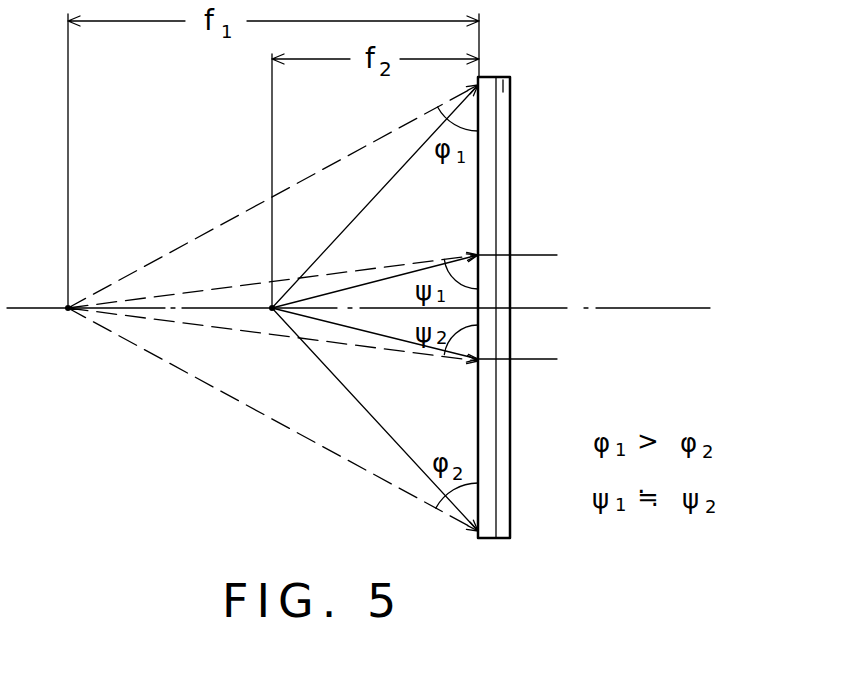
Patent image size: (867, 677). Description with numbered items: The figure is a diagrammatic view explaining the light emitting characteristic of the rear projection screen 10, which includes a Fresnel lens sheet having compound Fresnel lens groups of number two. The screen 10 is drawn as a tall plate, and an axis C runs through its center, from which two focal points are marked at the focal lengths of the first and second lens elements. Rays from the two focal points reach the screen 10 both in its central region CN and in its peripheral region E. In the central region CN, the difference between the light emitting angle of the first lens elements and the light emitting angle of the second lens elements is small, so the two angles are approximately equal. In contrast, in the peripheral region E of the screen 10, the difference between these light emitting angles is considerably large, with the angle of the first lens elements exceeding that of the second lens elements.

The rear projection screen 10 is at (512, 163).
The peripheral region E is at (503, 90).
The optical axis C is at (663, 305).
The central region CN is at (552, 347).